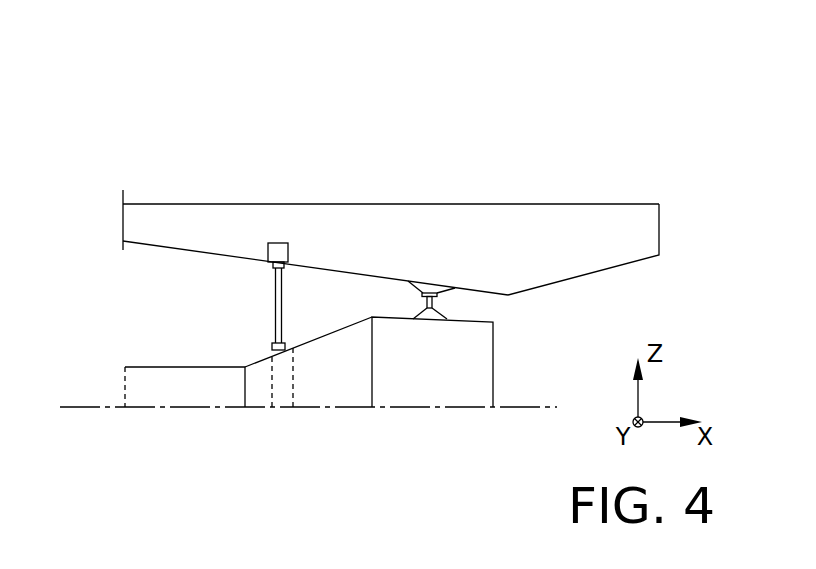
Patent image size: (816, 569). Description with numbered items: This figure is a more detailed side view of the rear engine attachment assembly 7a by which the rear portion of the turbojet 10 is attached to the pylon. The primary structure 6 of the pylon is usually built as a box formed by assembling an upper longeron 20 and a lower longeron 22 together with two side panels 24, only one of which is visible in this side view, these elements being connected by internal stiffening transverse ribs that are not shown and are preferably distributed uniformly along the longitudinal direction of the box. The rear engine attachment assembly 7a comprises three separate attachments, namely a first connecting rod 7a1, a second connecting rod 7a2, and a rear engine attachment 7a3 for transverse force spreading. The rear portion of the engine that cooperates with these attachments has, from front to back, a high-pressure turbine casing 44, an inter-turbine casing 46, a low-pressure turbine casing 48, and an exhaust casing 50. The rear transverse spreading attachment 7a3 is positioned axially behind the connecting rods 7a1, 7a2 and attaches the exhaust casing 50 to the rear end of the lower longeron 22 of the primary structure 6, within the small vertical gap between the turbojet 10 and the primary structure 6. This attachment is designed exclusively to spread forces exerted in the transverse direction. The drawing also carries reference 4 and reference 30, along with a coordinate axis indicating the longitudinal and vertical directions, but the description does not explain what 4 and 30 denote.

The mounting arrangement 4 is at (619, 137).
The primary structure 6 is at (213, 182).
The upper longeron 20 is at (400, 204).
The side panel 24 is at (146, 222).
The lower longeron 22 is at (150, 247).
The rear engine attachment assembly 7a is at (326, 292).
The first connecting rod 7a1 is at (275, 300).
The second connecting rod 7a2 is at (278, 296).
The rear engine attachment for transverse force spreading 7a3 is at (468, 305).
The turbojet 10 is at (150, 392).
The high-pressure turbine casing 44 is at (255, 395).
The inter-turbine casing 46 is at (290, 395).
The low-pressure turbine casing 48 is at (347, 398).
The exhaust casing 50 is at (438, 395).
The reference plane 30 is at (538, 408).